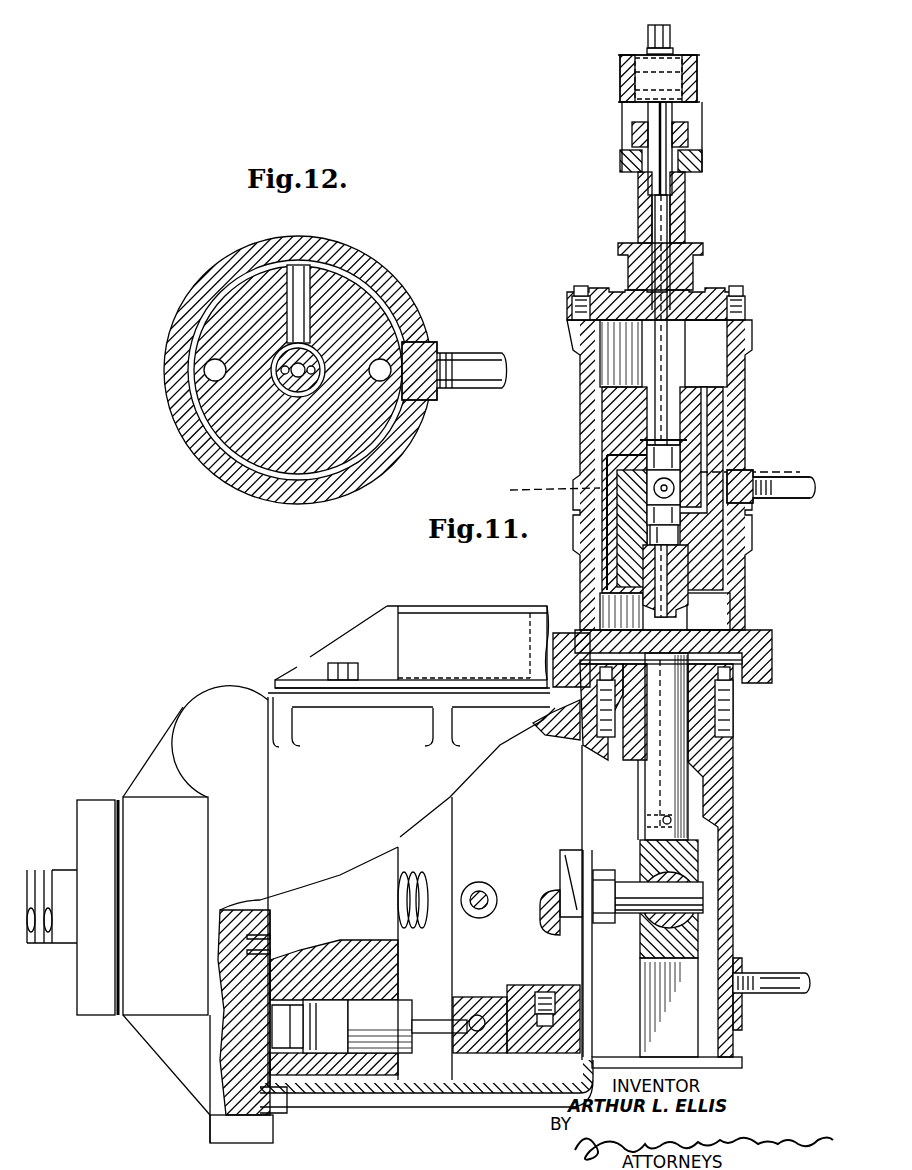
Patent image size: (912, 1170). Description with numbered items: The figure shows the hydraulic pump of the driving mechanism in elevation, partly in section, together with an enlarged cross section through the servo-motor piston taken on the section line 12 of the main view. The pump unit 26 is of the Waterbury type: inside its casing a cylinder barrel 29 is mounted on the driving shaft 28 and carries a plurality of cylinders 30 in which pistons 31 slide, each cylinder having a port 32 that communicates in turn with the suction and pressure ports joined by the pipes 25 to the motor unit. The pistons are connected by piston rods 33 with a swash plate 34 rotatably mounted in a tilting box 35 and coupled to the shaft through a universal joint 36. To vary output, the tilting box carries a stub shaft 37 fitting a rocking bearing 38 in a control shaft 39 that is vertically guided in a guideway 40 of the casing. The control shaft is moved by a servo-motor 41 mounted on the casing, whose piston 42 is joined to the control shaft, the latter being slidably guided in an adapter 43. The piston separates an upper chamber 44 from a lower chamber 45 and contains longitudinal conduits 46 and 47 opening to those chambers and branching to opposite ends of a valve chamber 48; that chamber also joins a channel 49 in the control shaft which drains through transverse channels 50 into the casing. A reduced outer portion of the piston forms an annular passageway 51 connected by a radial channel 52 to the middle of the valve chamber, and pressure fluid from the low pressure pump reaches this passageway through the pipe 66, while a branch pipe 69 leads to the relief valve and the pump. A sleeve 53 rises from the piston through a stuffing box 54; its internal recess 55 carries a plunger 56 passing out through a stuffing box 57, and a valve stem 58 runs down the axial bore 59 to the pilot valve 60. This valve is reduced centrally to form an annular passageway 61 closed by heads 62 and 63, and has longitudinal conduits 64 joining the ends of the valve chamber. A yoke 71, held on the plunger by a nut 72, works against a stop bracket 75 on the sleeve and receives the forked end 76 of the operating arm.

In FIG. 11, the section line 12- 12 is at (665, 476).
In FIG. 11, the pipes 25 is at (42, 870).
In FIG. 11, the pump unit 26 is at (408, 1106).
In FIG. 11, the driving shaft 28 is at (575, 880).
In FIG. 11, the cylinder barrel 29 is at (385, 966).
In FIG. 11, the cylinders 30 is at (310, 1026).
In FIG. 11, the pistons 31 is at (380, 1026).
In FIG. 11, the port 32 is at (272, 1048).
In FIG. 11, the piston rods 33 is at (432, 1035).
In FIG. 11, the swash plate 34 is at (490, 1058).
In FIG. 11, the tilting box 35 is at (530, 1080).
In FIG. 11, the universal joint 36 is at (425, 885).
In FIG. 11, the stub shaft 37 is at (700, 892).
In FIG. 11, the rocking bearing 38 is at (698, 865).
In FIG. 11, the control shaft 39 is at (688, 790).
In FIG. 11, the guideway 40 is at (690, 980).
In FIG. 12, the servo-motor 41 is at (304, 500).
In FIG. 11, the servo-motor 41 is at (745, 578).
In FIG. 12, the piston 42 is at (370, 310).
In FIG. 11, the piston 42 is at (602, 408).
In FIG. 11, the adapter 43 is at (742, 700).
In FIG. 11, the upper chamber 44 is at (728, 362).
In FIG. 11, the lower chamber 45 is at (725, 622).
In FIG. 12, the longitudinal conduit 46 is at (410, 405).
In FIG. 11, the longitudinal conduit 46 is at (707, 432).
In FIG. 12, the longitudinal conduit 47 is at (205, 360).
In FIG. 11, the longitudinal conduit 47 is at (630, 548).
In FIG. 12, the valve chamber 48 is at (320, 383).
In FIG. 11, the valve chamber 48 is at (678, 535).
In FIG. 11, the channel 49 is at (688, 604).
In FIG. 11, the transverse channels 50 is at (671, 820).
In FIG. 12, the annular passageway 51 is at (400, 350).
In FIG. 11, the annular passageway 51 is at (647, 500).
In FIG. 12, the radial channel 52 is at (312, 290).
In FIG. 11, the radial channel 52 is at (740, 464).
In FIG. 11, the sleeve 53 is at (686, 220).
In FIG. 11, the stuffing box 54 is at (703, 262).
In FIG. 11, the internal recess 55 is at (652, 210).
In FIG. 11, the plunger 56 is at (672, 115).
In FIG. 11, the stuffing box 57 is at (632, 132).
In FIG. 11, the valve stem 58 is at (655, 228).
In FIG. 11, the axial bore 59 is at (672, 238).
In FIG. 11, the pilot valve 60 is at (654, 490).
In FIG. 11, the annular passageway 61 is at (640, 485).
In FIG. 11, the head 62 is at (680, 512).
In FIG. 11, the head 63 is at (680, 462).
In FIG. 12, the longitudinal conduits 64 is at (276, 358).
In FIG. 11, the longitudinal conduits 64 is at (647, 525).
In FIG. 12, the pipe 66 is at (482, 354).
In FIG. 11, the pipe 66 is at (808, 510).
In FIG. 11, the branch pipe 69 is at (775, 995).
In FIG. 11, the yoke 71 is at (700, 68).
In FIG. 11, the nut 72 is at (648, 36).
In FIG. 11, the stop bracket 75 is at (702, 163).
In FIG. 11, the forked end 76 is at (620, 80).